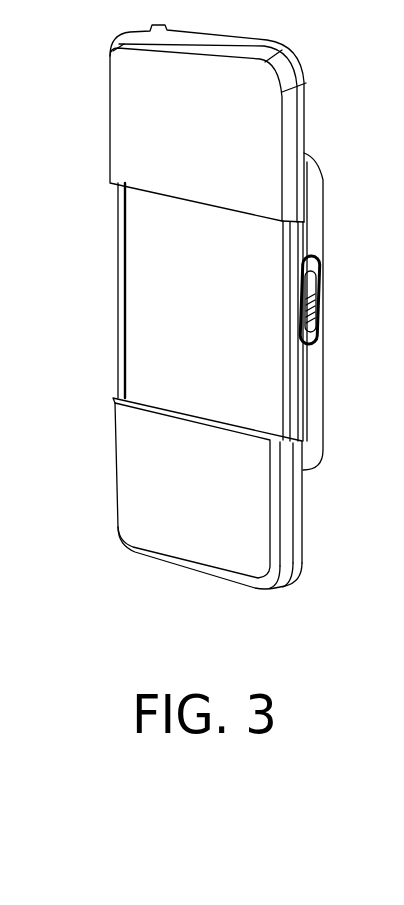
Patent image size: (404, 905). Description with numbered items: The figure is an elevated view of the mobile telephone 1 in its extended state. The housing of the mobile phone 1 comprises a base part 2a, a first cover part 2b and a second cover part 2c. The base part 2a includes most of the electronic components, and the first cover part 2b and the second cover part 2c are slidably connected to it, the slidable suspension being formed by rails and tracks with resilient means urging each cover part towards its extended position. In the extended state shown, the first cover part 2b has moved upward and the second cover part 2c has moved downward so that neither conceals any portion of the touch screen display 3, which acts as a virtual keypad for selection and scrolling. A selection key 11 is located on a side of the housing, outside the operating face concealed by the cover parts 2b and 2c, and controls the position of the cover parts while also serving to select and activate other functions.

The mobile telephone 1 is at (197, 307).
The base part 2a is at (313, 212).
The first cover part 2b is at (130, 127).
The second cover part 2c is at (140, 488).
The touch screen display 3 is at (130, 243).
The selection key 11 is at (318, 310).